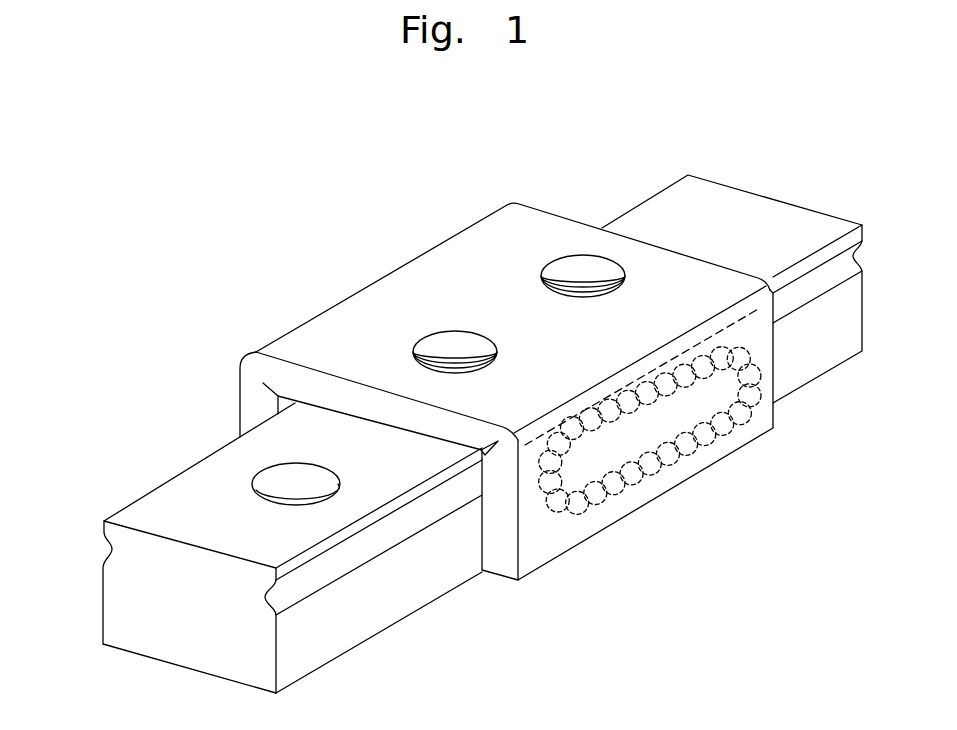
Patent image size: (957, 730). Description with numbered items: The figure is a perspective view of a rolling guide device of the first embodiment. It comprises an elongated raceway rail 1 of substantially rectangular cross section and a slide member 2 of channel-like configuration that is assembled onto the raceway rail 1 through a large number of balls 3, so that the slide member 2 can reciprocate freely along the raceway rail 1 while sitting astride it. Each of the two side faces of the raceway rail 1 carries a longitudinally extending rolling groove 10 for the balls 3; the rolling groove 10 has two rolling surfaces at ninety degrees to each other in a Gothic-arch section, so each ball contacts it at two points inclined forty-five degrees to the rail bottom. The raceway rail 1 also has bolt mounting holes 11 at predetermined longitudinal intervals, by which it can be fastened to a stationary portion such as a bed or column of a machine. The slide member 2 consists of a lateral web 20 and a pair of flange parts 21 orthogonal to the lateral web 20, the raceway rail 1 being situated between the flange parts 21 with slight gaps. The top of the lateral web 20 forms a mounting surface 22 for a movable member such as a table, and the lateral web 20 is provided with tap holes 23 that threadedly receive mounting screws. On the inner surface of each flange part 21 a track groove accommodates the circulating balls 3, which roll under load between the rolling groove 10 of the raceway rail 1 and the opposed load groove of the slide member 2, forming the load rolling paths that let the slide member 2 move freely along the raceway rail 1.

The raceway rail 1 is at (455, 434).
The slide member 2 is at (506, 380).
The balls 3 is at (651, 468).
The rolling groove 10 is at (98, 543).
The bolt mounting hole 11 is at (272, 477).
The lateral web 20 is at (337, 392).
The flange part 21 is at (498, 562).
The mounting surface 22 is at (430, 270).
The tap hole 23 is at (438, 343).